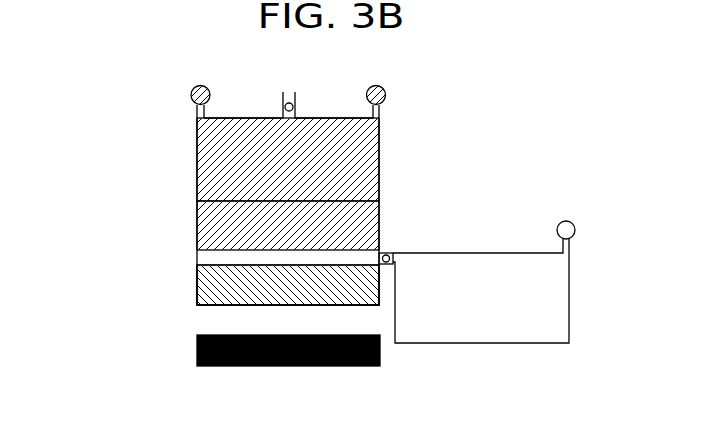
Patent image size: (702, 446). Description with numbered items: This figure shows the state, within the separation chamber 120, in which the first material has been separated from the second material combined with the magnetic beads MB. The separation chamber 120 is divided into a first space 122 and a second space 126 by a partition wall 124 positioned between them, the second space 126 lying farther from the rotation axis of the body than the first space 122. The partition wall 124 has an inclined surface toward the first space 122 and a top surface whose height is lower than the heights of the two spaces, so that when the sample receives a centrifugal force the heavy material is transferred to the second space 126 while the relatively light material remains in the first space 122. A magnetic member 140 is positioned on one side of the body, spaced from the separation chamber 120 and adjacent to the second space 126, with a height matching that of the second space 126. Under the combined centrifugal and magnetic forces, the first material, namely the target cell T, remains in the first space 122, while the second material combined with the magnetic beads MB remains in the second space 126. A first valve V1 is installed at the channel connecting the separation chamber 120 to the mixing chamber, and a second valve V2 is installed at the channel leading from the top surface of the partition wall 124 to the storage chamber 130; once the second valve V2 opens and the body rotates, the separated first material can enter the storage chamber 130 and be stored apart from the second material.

The separation chamber 120 is at (211, 211).
The first space 122 is at (197, 118).
The partition wall 124 is at (197, 201).
The second space 126 is at (240, 285).
The storage chamber 130 is at (480, 343).
The magnetic member 140 is at (290, 366).
The target cell T is at (375, 170).
The first valve V1 is at (287, 87).
The second valve V2 is at (395, 246).
The magnetic beads MB is at (229, 305).